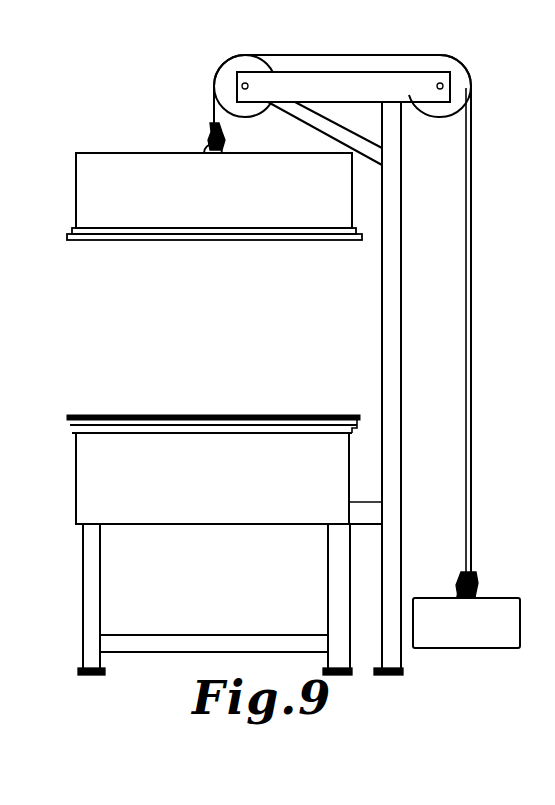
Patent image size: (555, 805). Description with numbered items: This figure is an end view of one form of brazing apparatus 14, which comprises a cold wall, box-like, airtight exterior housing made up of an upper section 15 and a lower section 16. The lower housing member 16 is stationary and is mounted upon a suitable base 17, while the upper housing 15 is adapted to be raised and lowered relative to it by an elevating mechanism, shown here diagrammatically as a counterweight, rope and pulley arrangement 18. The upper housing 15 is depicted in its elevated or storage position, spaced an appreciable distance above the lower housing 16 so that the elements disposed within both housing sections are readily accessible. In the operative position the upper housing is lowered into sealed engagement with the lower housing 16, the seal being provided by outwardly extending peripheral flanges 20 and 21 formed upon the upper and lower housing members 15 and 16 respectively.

The brazing apparatus 14 is at (114, 86).
The upper section 15 is at (214, 210).
The lower section 16 is at (219, 492).
The base 17 is at (91, 674).
The counterweight, rope and pulley arrangement 18 is at (473, 88).
The peripheral flange 20 is at (262, 240).
The peripheral flange 21 is at (232, 414).